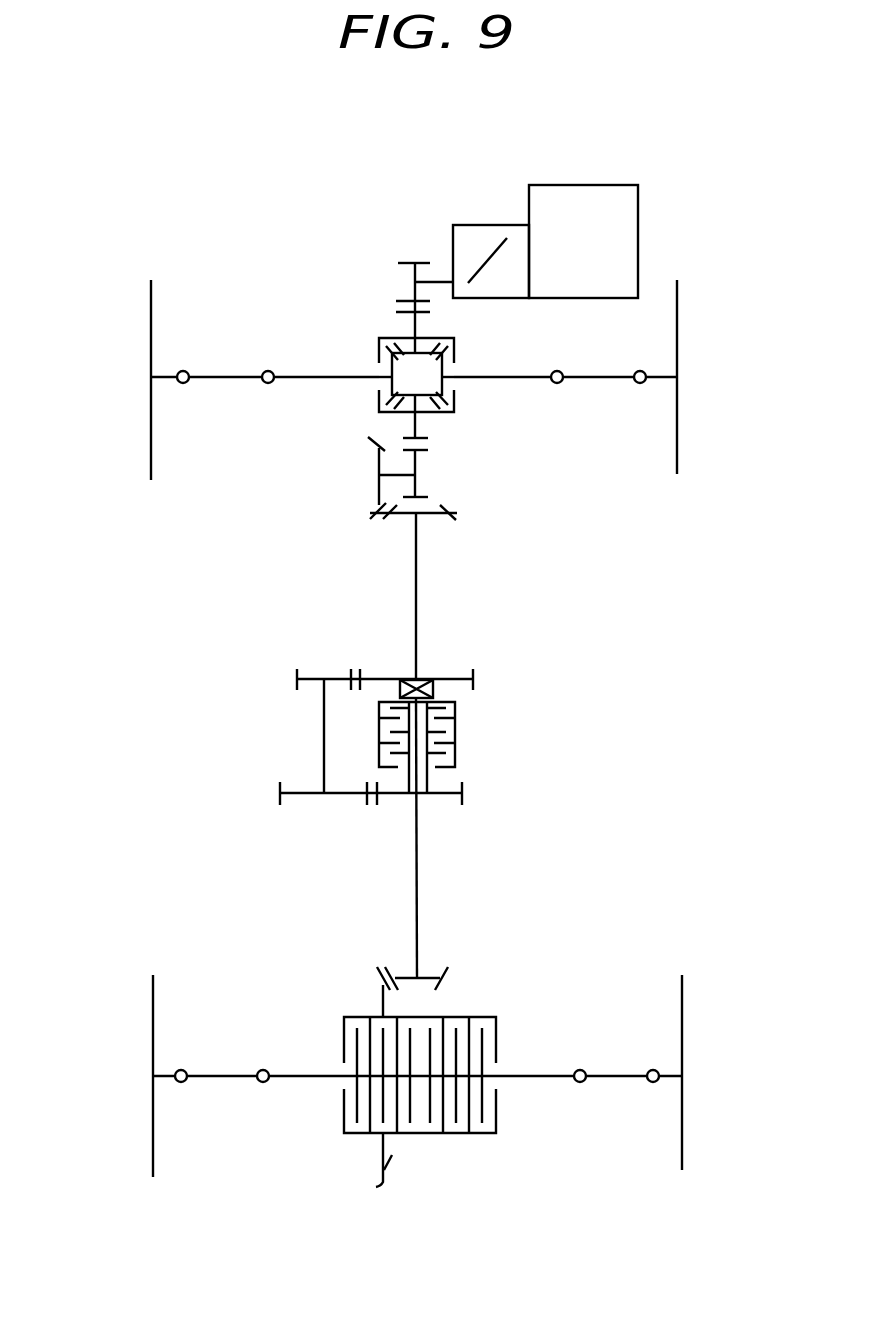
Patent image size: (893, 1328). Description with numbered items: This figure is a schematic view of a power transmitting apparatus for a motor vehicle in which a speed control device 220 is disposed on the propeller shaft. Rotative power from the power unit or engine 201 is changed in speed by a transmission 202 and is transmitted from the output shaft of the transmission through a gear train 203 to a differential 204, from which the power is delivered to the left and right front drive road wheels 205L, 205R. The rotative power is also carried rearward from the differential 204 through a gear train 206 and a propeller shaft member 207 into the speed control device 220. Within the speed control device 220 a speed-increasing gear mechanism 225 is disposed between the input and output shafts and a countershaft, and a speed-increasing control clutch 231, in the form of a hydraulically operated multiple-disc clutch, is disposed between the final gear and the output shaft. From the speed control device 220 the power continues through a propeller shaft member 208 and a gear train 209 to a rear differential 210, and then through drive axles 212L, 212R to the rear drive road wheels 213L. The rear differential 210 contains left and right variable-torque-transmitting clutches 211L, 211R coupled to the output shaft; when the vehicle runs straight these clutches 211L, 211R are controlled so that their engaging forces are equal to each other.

The engine 201 is at (571, 185).
The transmission 202 is at (476, 225).
The gear train 203 is at (380, 262).
The differential 204 is at (465, 421).
The left front drive road wheel 205L is at (150, 428).
The right front drive road wheel 205R is at (677, 445).
The gear train 206 is at (364, 480).
The propeller shaft member 207 is at (418, 632).
The propeller shaft member 208 is at (420, 940).
The gear train 209 is at (369, 962).
The rear differential 210 is at (432, 1117).
The left variable-torque-transmitting clutch 211L is at (348, 1144).
The right variable-torque-transmitting clutch 211R is at (510, 1024).
The left drive axle 212L is at (220, 1083).
The right drive axle 212R is at (618, 1079).
The rear drive road wheel 213L is at (150, 1122).
The speed control device 220 is at (404, 737).
The speed-increasing gear mechanism 225 is at (279, 736).
The speed-increasing control clutch 231 is at (461, 736).